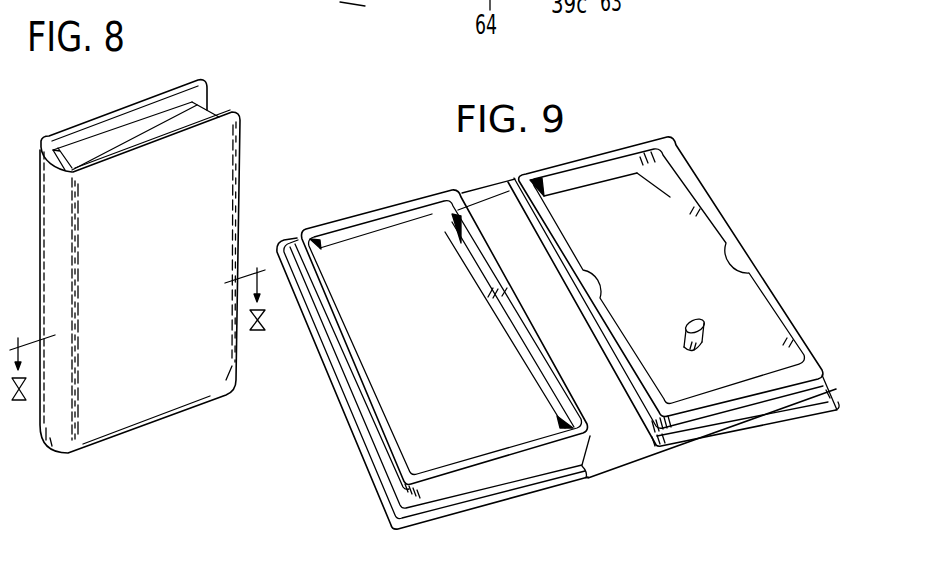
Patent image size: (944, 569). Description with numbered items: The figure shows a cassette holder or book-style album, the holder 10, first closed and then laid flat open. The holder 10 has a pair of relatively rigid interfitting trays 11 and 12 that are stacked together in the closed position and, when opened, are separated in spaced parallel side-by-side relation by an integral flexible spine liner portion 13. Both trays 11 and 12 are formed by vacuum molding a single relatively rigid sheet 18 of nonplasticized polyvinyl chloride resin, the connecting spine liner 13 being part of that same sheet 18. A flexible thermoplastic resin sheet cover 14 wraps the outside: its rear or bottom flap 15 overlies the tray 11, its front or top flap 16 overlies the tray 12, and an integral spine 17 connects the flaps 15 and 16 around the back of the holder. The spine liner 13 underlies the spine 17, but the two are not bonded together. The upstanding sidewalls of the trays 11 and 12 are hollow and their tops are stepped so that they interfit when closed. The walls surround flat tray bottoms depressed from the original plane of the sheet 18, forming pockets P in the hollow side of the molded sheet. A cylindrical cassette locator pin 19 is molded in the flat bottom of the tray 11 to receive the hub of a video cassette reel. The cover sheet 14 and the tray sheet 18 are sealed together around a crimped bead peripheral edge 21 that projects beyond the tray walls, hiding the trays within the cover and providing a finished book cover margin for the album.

In FIG. 8, the holder 10 is at (252, 107).
In FIG. 9, the holder 10 is at (682, 138).
In FIG. 8, the tray 11 is at (198, 101).
In FIG. 9, the tray 11 is at (673, 301).
In FIG. 8, the tray 12 is at (197, 117).
In FIG. 9, the tray 12 is at (460, 382).
In FIG. 9, the spine liner portion 13 is at (592, 381).
In FIG. 8, the thermoplastic resin sheet cover 14 is at (172, 392).
In FIG. 8, the rear or bottom flap 15 is at (62, 136).
In FIG. 9, the rear or bottom flap 15 is at (737, 440).
In FIG. 8, the front or top flap 16 is at (225, 371).
In FIG. 9, the front or top flap 16 is at (513, 503).
In FIG. 8, the spine 17 is at (58, 420).
In FIG. 8, the tray sheet 18 is at (143, 113).
In FIG. 9, the tray sheet 18 is at (430, 488).
In FIG. 9, the cassette locator pin 19 is at (703, 319).
In FIG. 8, the crimped bead peripheral edge 21 is at (243, 157).
In FIG. 9, the crimped bead peripheral edge 21 is at (833, 412).
In FIG. 9, the pockets P is at (587, 473).